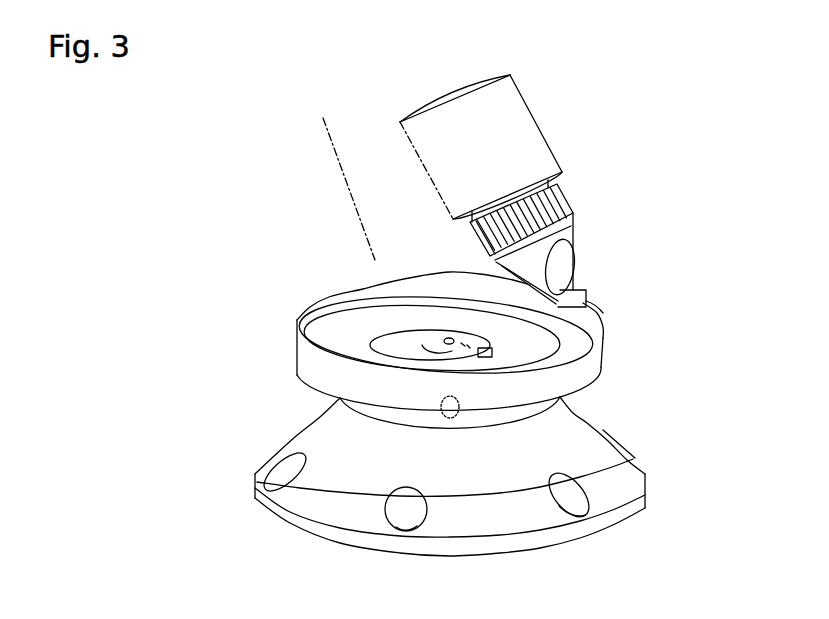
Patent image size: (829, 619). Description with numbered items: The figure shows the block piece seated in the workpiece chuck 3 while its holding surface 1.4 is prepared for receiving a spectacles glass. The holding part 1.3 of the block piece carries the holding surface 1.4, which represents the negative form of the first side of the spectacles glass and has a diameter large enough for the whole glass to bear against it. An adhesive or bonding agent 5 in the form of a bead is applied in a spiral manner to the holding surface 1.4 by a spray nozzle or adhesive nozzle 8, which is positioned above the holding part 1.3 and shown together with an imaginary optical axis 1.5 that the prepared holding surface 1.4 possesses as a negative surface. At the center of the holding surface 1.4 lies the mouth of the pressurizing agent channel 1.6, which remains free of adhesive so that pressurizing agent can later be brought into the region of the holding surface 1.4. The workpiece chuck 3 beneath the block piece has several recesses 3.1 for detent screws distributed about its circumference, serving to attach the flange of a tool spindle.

The holding part 1.3 is at (313, 362).
The holding surface 1.4 is at (364, 291).
The imaginary optical axis 1.5 is at (334, 150).
The pressurizing agent channel 1.6 is at (598, 303).
The workpiece chuck 3 is at (292, 507).
The recesses 3.1 is at (403, 515).
The adhesive or bonding agent 5 is at (369, 339).
The adhesive nozzle 8 is at (517, 142).